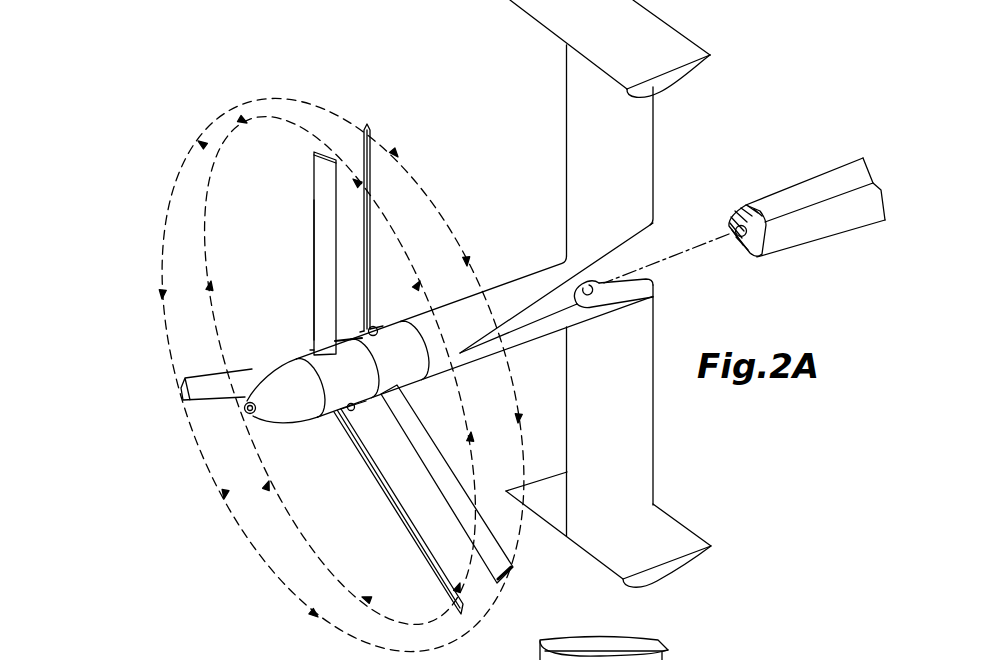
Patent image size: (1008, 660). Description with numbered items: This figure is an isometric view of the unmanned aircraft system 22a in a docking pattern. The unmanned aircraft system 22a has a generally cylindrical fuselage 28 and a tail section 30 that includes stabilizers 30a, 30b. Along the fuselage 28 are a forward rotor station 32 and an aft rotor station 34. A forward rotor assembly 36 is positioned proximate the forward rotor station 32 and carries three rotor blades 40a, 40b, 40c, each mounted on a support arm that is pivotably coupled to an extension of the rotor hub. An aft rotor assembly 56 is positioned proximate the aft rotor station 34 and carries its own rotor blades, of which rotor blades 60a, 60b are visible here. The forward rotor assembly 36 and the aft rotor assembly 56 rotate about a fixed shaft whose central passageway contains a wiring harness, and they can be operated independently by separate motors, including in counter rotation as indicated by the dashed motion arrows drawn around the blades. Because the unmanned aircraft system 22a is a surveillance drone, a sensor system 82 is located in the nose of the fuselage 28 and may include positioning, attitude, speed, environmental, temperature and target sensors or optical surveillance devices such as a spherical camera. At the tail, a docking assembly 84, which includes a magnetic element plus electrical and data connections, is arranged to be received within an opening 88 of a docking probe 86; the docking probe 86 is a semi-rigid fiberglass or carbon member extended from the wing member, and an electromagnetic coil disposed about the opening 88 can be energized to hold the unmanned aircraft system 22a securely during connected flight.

The unmanned aircraft system 22a is at (703, 121).
The fuselage 28 is at (523, 282).
The tail section 30 is at (642, 460).
The stabilizer 30a is at (657, 33).
The stabilizer 30b is at (665, 533).
The forward rotor station 32 is at (333, 409).
The aft rotor station 34 is at (377, 324).
The forward rotor assembly 36 is at (310, 308).
The rotor blade 40a is at (320, 207).
The rotor blade 40b is at (403, 525).
The rotor blade 40c is at (192, 392).
The aft rotor assembly 56 is at (372, 223).
The rotor blade 60a is at (370, 177).
The rotor blade 60b is at (497, 575).
The sensor system 82 is at (257, 413).
The docking assembly 84 is at (596, 297).
The docking probe 86 is at (786, 207).
The opening 88 is at (729, 229).